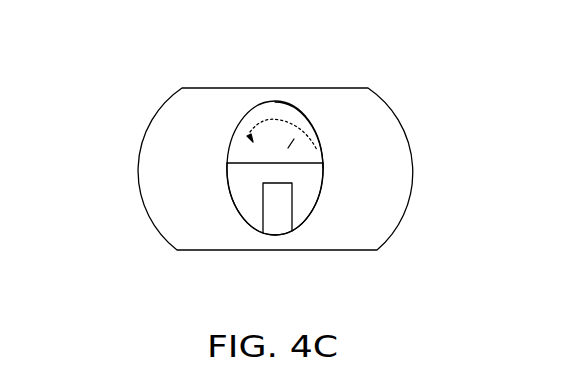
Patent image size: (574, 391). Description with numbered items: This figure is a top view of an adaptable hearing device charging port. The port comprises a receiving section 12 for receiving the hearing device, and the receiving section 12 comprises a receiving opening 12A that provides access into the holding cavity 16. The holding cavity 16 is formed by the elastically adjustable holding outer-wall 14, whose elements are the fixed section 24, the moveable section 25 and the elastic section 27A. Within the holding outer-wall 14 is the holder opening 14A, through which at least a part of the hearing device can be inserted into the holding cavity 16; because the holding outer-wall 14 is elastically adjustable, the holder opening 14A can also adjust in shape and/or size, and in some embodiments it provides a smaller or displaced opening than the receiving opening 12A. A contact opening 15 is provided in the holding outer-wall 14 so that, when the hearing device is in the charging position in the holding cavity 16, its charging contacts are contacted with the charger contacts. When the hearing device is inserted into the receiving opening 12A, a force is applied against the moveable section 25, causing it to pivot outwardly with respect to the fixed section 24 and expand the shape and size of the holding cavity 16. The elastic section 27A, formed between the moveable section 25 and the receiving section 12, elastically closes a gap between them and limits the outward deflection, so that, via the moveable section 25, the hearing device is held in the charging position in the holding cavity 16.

The receiving section 12 is at (203, 196).
The receiving opening 12A is at (232, 137).
The holding outer-wall 14 is at (318, 151).
The holder opening 14A is at (277, 121).
The contact opening 15 is at (277, 213).
The holding cavity 16 is at (253, 142).
The fixed section 24 is at (253, 192).
The moveable section 25 is at (288, 147).
The elastic section 27A is at (290, 146).